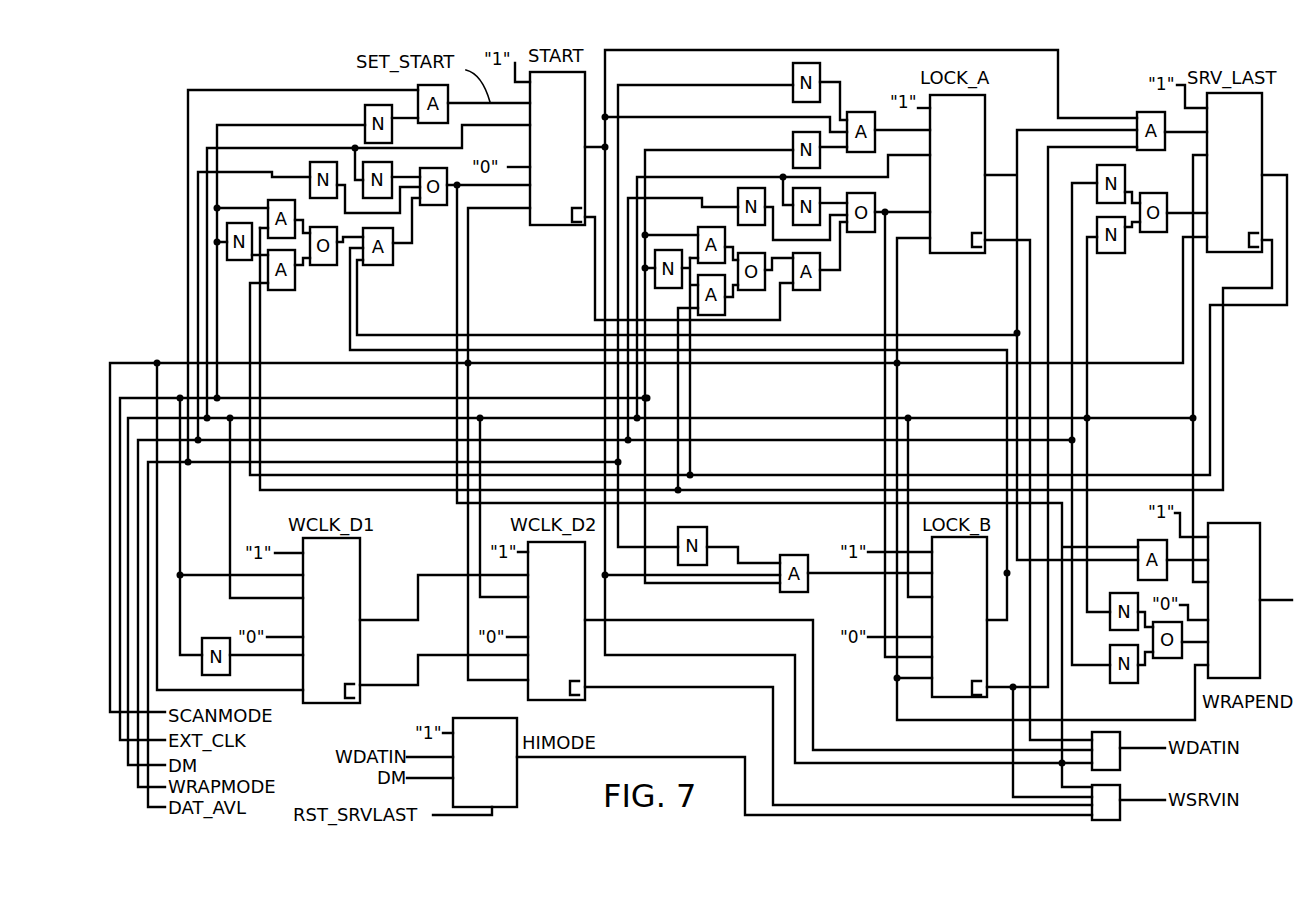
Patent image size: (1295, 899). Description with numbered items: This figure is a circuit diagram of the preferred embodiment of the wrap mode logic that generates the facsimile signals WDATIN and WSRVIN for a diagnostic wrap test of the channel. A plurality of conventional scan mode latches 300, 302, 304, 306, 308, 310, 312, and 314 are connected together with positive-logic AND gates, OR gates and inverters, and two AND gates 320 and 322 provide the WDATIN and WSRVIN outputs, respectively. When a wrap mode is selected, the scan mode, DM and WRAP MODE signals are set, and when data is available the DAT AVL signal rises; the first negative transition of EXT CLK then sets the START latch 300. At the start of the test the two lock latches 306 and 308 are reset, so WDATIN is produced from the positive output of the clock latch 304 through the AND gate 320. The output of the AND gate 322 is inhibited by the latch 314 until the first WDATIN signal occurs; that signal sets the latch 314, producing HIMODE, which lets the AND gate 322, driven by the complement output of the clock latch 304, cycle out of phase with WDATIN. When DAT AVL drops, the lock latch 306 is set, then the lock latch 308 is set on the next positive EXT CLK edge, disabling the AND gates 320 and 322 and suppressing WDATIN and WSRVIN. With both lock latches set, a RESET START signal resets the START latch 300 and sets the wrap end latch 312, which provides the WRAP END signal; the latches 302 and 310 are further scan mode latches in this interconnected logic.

The START latch 300 is at (561, 226).
The scan mode latch 302 is at (361, 540).
The clock latch 304 is at (534, 700).
The lock latch 306 is at (988, 98).
The lock latch 308 is at (976, 698).
The scan mode latch 310 is at (1252, 256).
The wrap end latch 312 is at (1226, 528).
The latch 314 is at (518, 719).
The AND gate 320 is at (1121, 733).
The AND gate 322 is at (1121, 789).